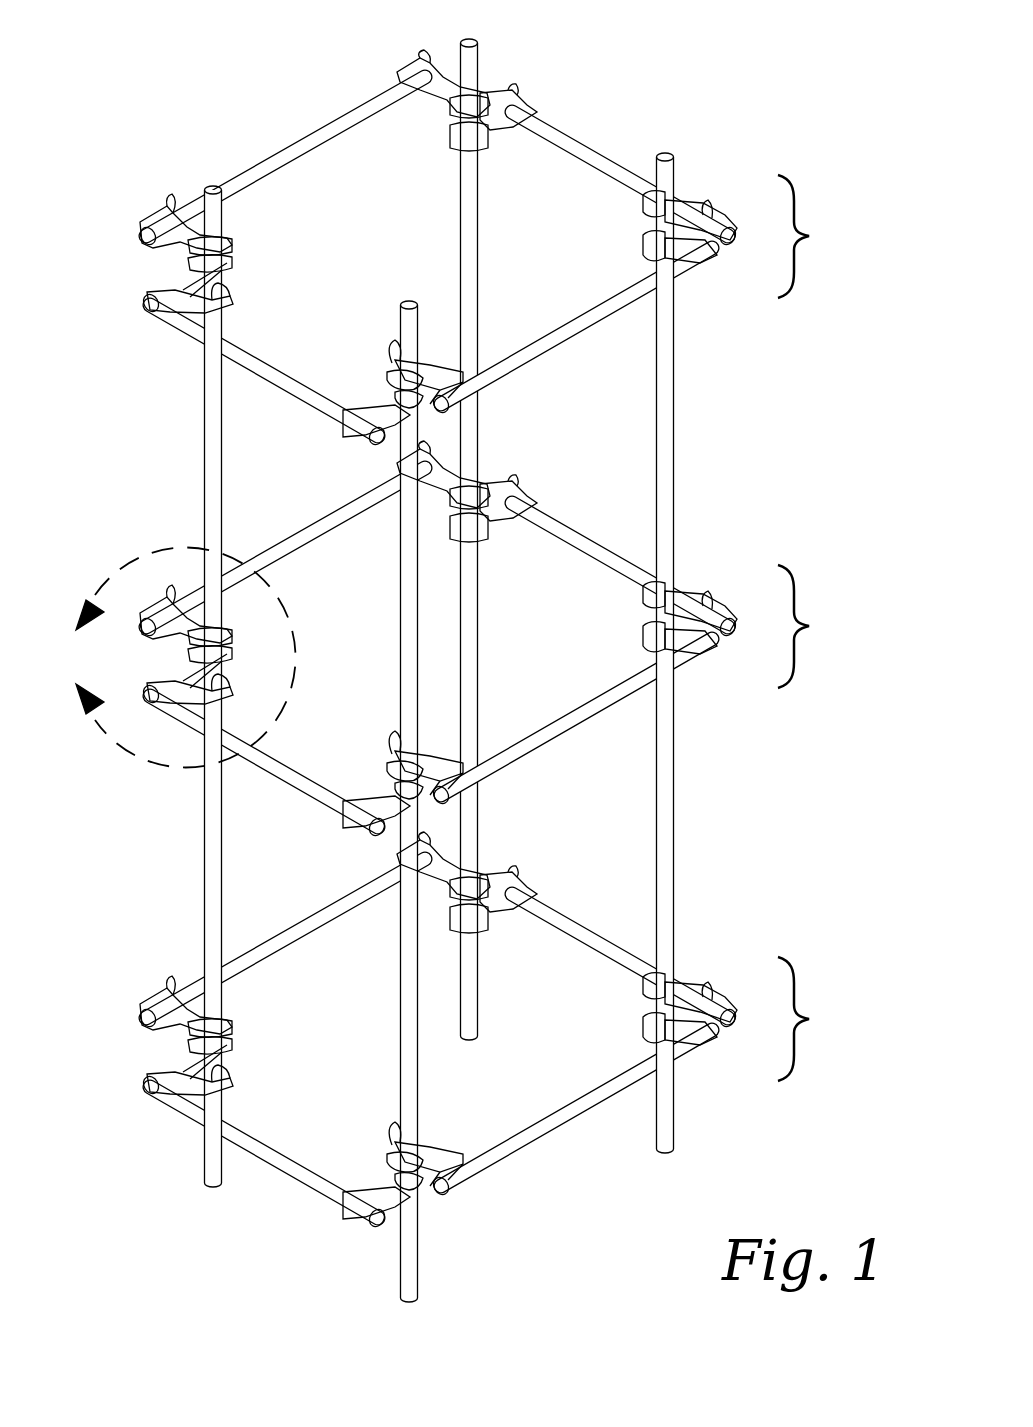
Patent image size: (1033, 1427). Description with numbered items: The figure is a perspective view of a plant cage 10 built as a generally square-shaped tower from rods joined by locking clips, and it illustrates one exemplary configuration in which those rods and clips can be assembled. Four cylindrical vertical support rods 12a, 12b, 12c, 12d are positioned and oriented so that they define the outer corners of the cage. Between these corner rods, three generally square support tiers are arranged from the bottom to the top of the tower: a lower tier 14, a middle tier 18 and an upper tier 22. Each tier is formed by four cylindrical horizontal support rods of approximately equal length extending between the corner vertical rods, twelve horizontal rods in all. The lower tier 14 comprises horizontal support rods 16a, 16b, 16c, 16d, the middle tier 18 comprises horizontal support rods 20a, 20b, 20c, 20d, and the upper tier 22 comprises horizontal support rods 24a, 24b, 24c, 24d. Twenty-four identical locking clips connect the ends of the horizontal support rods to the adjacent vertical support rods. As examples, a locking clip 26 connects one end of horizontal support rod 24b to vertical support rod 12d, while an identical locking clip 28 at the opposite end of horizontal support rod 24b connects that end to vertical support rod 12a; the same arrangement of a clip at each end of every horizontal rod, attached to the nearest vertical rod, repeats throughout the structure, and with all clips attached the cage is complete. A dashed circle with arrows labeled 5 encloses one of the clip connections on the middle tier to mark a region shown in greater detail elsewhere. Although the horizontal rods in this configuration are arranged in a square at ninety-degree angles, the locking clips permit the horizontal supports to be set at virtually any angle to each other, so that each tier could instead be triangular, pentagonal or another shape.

The plant cage 10 is at (692, 73).
The vertical support rod 12a is at (474, 66).
The vertical support rod 12b is at (671, 173).
The vertical support rod 12c is at (400, 318).
The vertical support rod 12d is at (220, 223).
The lower tier 14 is at (813, 1019).
The horizontal support rod 16a is at (303, 1170).
The horizontal support rod 16b is at (310, 920).
The horizontal support rod 16c is at (562, 918).
The horizontal support rod 16d is at (550, 1117).
The middle tier 18 is at (813, 626).
The horizontal support rod 20a is at (305, 775).
The horizontal support rod 20b is at (293, 547).
The horizontal support rod 20c is at (577, 537).
The horizontal support rod 20d is at (553, 713).
The upper tier 22 is at (813, 236).
The horizontal support rod 24a is at (293, 380).
The horizontal support rod 24b is at (262, 170).
The horizontal support rod 24c is at (603, 162).
The horizontal support rod 24d is at (555, 327).
The locking clip 26 is at (168, 255).
The locking clip 28 is at (432, 97).
The detail view circle (FIG. 5) 5 is at (178, 657).